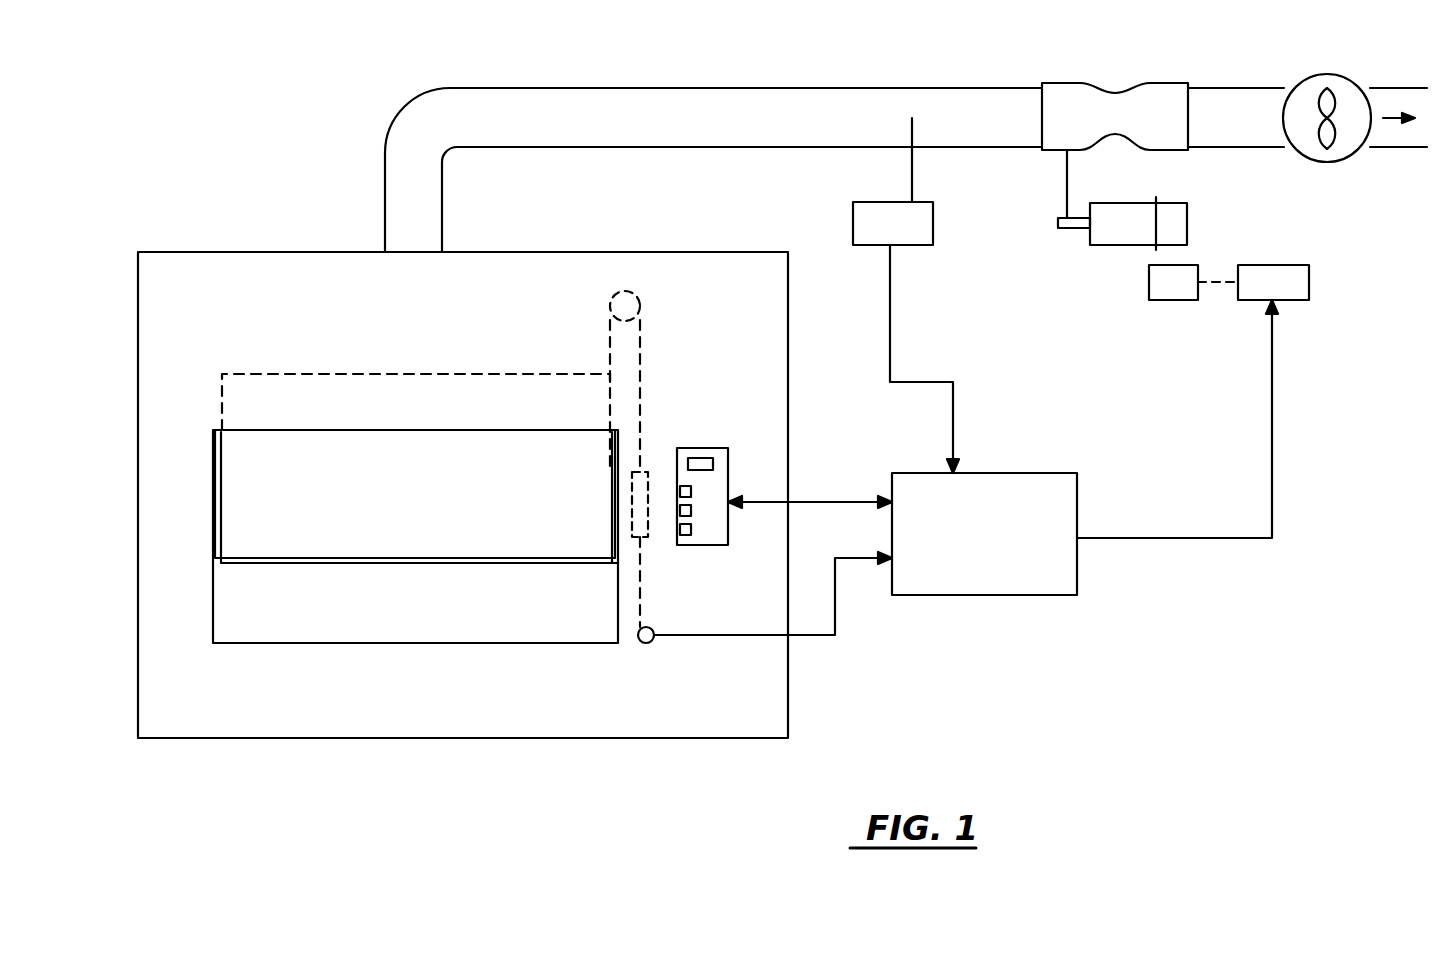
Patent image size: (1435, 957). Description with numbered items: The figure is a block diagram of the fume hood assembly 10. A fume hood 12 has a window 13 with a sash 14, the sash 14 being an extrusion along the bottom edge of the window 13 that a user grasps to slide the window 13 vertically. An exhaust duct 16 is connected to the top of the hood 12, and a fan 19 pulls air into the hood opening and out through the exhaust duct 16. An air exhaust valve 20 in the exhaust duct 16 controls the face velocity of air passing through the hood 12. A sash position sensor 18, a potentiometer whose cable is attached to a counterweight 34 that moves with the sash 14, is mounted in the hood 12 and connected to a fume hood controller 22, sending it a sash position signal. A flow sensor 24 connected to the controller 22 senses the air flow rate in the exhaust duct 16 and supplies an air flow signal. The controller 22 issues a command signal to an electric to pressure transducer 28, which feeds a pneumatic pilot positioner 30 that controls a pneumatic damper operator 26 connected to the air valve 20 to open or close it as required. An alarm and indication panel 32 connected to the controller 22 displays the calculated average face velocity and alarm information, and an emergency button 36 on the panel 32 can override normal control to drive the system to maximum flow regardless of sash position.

The fume hood assembly 10 is at (930, 718).
The fume hood 12 is at (138, 398).
The window 13 is at (235, 485).
The sash 14 is at (245, 563).
The exhaust duct 16 is at (655, 50).
The sash position sensor 18 is at (645, 643).
The fan 19 is at (1322, 74).
The air exhaust valve 20 is at (1175, 83).
The fume hood controller 22 is at (1045, 473).
The flow sensor 24 is at (853, 207).
The pneumatic damper operator 26 is at (1190, 210).
The electric to pressure transducer 28 is at (1309, 265).
The pneumatic pilot positioner 30 is at (1155, 300).
The alarm and indication panel 32 is at (723, 498).
The counterweight 34 is at (648, 472).
The emergency button 36 is at (692, 540).